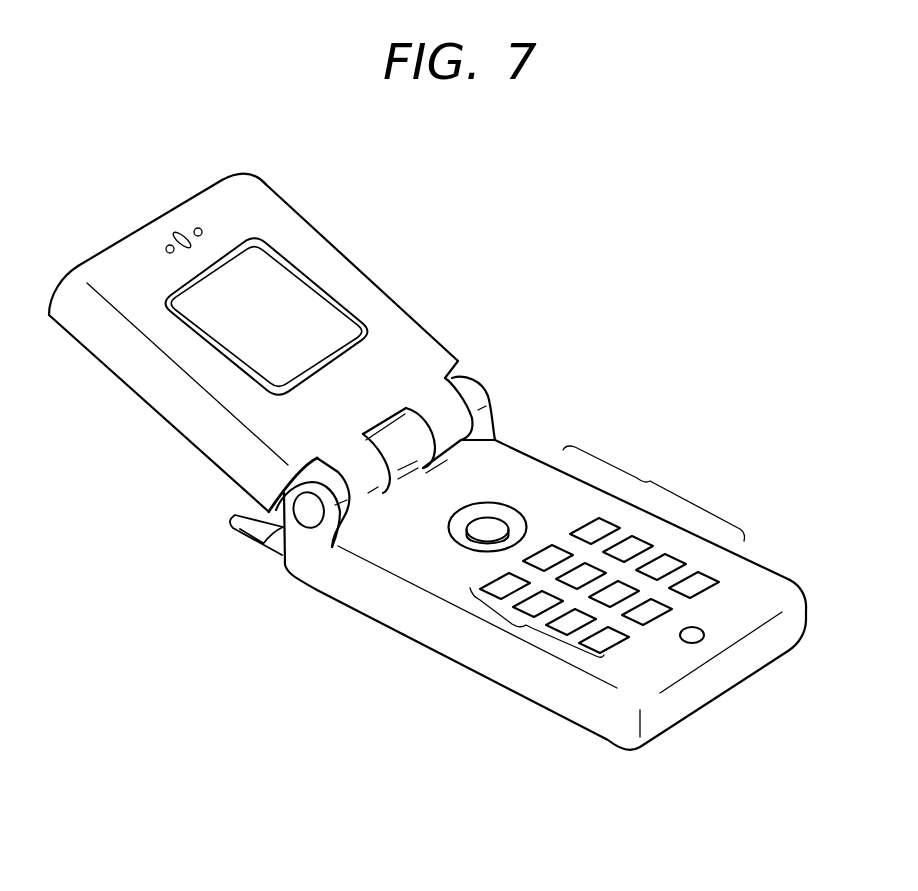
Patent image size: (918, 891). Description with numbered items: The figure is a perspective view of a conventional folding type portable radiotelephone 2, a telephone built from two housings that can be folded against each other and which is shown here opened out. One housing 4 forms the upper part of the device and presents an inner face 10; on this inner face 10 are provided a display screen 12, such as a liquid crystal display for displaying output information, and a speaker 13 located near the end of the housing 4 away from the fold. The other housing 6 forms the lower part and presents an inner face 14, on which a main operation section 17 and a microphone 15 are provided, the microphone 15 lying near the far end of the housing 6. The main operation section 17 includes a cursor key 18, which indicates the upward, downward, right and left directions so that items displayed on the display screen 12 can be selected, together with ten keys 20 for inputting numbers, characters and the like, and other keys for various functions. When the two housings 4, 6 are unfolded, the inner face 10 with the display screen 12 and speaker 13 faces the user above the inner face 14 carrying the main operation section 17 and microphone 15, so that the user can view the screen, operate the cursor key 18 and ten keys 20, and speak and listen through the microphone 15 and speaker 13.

The folding type portable radiotelephone 2 is at (152, 566).
The housing 4 is at (173, 413).
The housing 6 is at (428, 628).
The inner face 10 is at (397, 350).
The display screen 12 is at (284, 292).
The speaker 13 is at (183, 237).
The inner face 14 is at (565, 500).
The microphone 15 is at (703, 635).
The main operation section 17 is at (641, 482).
The cursor key 18 is at (489, 528).
The ten keys 20 is at (520, 627).